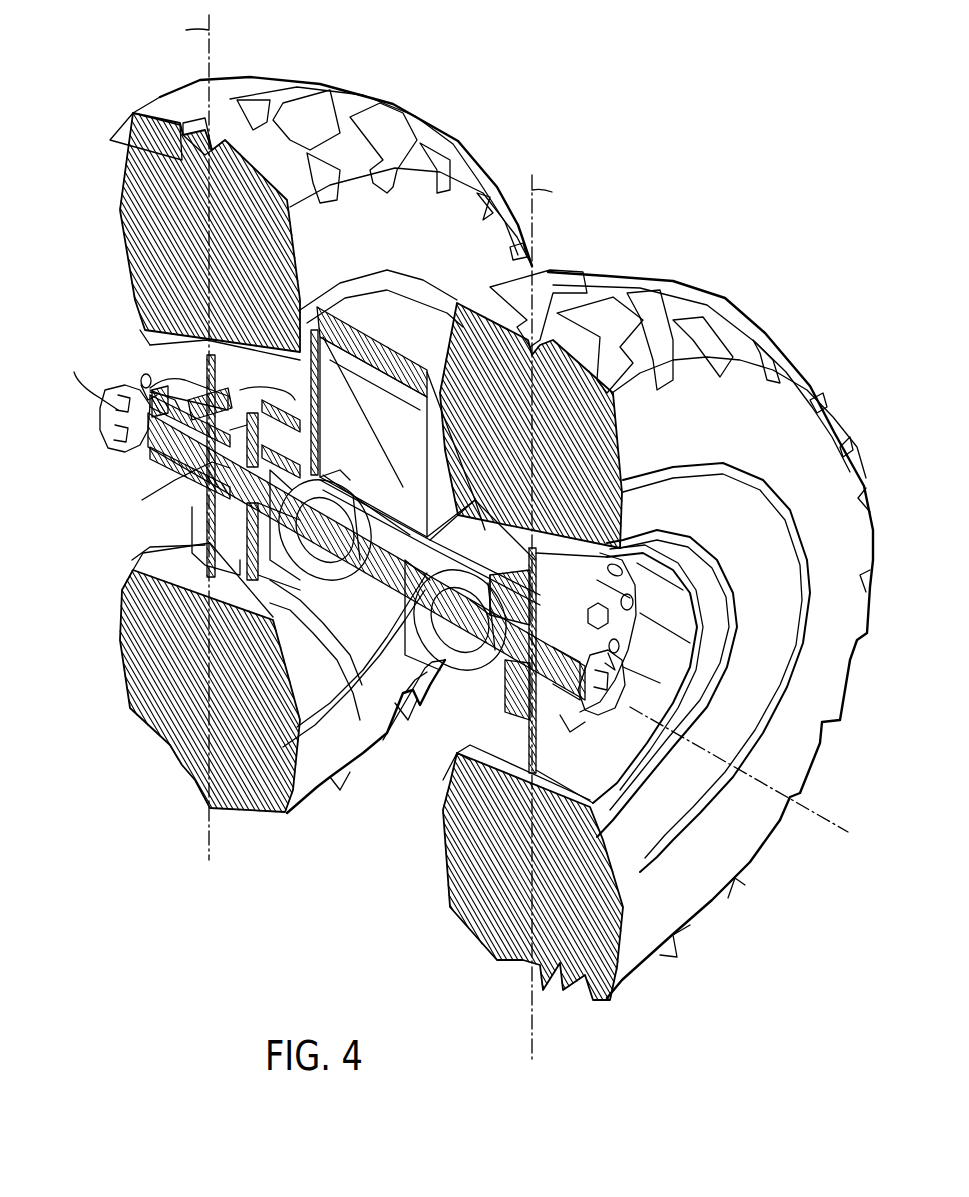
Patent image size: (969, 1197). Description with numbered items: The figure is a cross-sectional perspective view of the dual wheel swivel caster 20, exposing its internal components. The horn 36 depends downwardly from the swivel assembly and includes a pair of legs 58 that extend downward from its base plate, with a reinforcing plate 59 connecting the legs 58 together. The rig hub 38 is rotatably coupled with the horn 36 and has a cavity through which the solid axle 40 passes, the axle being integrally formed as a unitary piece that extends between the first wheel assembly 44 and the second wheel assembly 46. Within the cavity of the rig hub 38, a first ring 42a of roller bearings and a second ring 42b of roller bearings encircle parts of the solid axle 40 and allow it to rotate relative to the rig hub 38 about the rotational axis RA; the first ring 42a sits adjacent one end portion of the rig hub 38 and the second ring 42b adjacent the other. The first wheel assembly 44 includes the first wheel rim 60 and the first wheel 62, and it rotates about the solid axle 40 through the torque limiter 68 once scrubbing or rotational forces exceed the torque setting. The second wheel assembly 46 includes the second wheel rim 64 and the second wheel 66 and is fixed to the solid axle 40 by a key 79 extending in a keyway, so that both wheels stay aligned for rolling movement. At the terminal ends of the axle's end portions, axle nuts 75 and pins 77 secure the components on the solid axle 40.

The dual wheel swivel caster 20 is at (628, 120).
The horn 36 is at (390, 343).
The rig hub 38 is at (366, 576).
The solid axle 40 is at (148, 455).
The first ring of roller bearings 42a is at (313, 587).
The second ring of roller bearings 42b is at (447, 660).
The first wheel assembly 44 is at (440, 130).
The second wheel assembly 46 is at (785, 340).
The legs 58 is at (355, 464).
The reinforcing plate 59 is at (397, 424).
The first wheel rim 60 is at (192, 554).
The first wheel 62 is at (422, 254).
The second wheel rim 64 is at (612, 771).
The second wheel 66 is at (784, 448).
The torque limiter 68 is at (237, 378).
The axle nuts 75 is at (107, 431).
The pins 77 is at (147, 375).
The key 79 is at (200, 465).